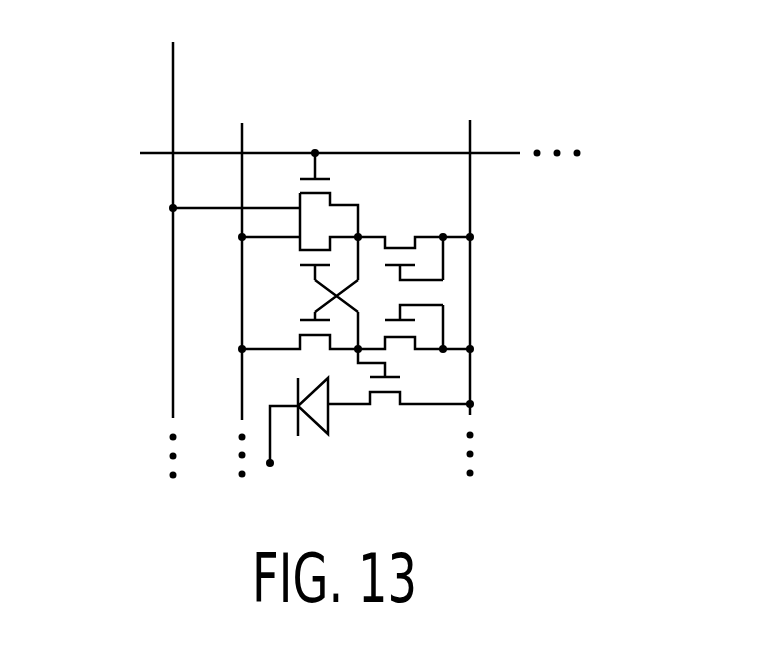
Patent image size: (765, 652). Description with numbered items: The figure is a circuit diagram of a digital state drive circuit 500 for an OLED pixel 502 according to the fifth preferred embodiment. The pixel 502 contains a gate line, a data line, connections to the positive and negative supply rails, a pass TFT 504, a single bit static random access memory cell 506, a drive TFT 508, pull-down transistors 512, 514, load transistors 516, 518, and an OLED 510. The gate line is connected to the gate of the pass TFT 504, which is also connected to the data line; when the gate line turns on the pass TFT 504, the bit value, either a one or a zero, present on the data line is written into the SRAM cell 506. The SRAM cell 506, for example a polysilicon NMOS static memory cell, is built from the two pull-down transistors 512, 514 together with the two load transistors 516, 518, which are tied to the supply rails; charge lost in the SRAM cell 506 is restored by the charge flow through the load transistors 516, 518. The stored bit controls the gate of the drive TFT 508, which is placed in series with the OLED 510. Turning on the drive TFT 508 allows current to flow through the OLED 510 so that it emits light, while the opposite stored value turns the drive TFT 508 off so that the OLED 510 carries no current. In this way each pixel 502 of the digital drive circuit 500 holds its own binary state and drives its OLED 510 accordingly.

The digital drive circuit 500 is at (338, 240).
The OLED pixel 502 is at (308, 294).
The pass TFT 504 is at (333, 186).
The single bit static random access memory (SRAM) cell 506 is at (295, 292).
The drive TFT 508 is at (387, 403).
The OLED 510 is at (340, 428).
The pull-down transistor 512 is at (296, 259).
The pull-down transistor 514 is at (295, 327).
The load transistor 516 is at (400, 240).
The load transistor 518 is at (400, 350).